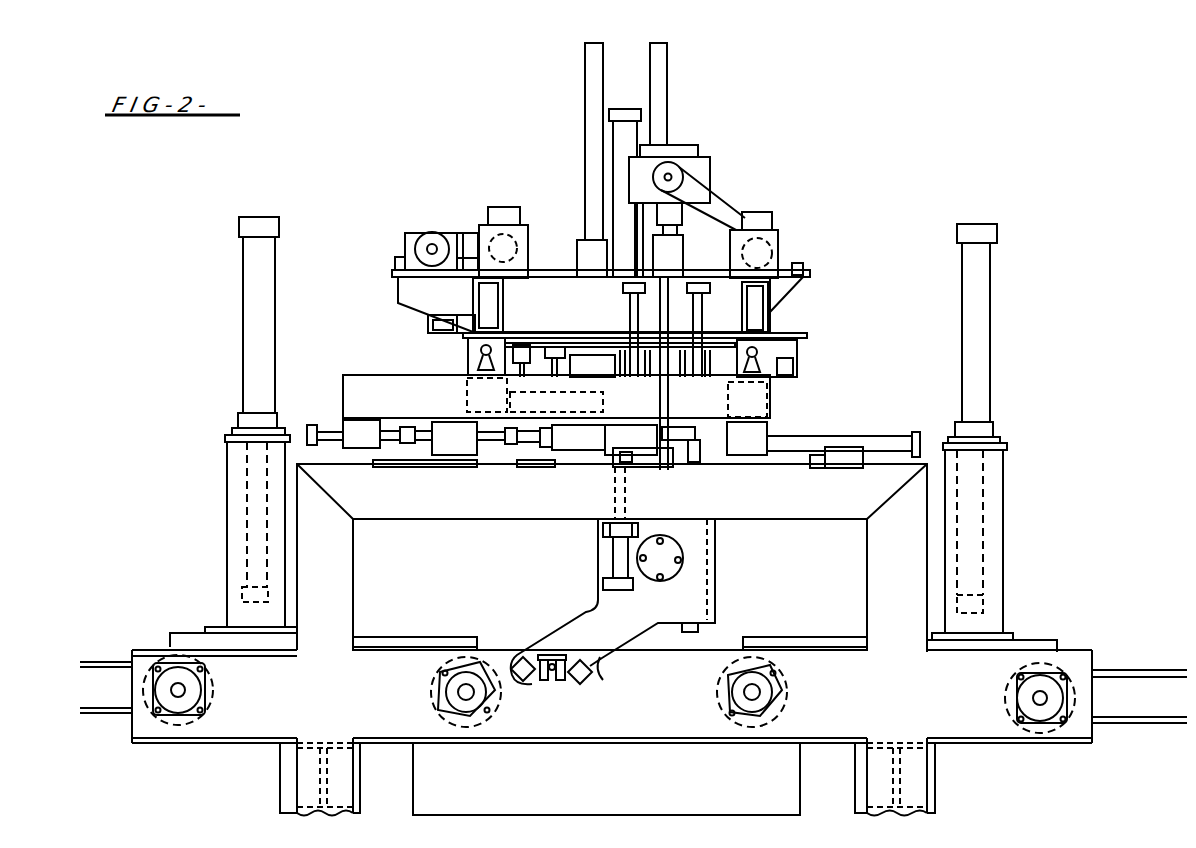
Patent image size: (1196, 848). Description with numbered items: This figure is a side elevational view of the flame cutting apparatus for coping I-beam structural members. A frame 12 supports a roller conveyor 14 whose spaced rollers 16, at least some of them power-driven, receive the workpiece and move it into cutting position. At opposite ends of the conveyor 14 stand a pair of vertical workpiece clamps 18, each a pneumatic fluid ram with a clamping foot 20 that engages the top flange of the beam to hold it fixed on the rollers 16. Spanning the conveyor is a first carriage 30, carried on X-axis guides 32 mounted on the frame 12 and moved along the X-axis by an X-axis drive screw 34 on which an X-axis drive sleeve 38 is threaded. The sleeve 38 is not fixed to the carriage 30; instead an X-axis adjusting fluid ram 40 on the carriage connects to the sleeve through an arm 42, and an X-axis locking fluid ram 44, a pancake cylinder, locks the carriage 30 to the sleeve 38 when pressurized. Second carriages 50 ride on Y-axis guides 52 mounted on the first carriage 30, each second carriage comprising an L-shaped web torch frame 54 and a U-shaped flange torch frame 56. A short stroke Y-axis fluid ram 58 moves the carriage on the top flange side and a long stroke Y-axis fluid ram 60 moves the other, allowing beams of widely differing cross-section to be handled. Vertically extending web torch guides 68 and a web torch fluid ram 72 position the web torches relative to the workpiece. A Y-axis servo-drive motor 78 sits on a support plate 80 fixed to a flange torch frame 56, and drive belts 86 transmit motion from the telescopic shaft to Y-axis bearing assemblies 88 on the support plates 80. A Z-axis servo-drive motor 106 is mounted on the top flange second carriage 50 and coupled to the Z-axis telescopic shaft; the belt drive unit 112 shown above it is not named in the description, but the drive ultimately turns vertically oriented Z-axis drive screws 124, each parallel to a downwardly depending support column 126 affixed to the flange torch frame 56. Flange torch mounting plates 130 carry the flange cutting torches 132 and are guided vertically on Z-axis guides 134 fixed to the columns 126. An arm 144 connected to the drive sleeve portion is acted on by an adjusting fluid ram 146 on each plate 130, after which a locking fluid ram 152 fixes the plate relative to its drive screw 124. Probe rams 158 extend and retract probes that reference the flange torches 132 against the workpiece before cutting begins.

The frame 12 is at (863, 554).
The roller conveyor 14 is at (779, 739).
The rollers 16 is at (207, 709).
The vertical workpiece clamps 18 is at (240, 278).
The clamping foot 20 is at (240, 596).
The first carriage 30 is at (783, 414).
The X-axis guides 32 is at (835, 442).
The X-axis drive screw 34 is at (488, 455).
The X-axis drive sleeve 38 is at (622, 442).
The X-axis adjusting fluid ram 40 is at (604, 394).
The arm 42 is at (662, 430).
The X-axis locking fluid ram 44 is at (531, 404).
The second carriages 50 is at (782, 320).
The Y-axis guides 52 is at (482, 355).
The web torch frame 54 is at (428, 319).
The flange torch frame 56 is at (570, 305).
The short stroke Y-axis fluid ram 58 is at (518, 348).
The long stroke Y-axis fluid ram 60 is at (791, 366).
The web torch guides 68 is at (592, 74).
The web torch fluid ram 72 is at (633, 106).
The Y-axis servo-drive motor 78 is at (518, 243).
The support plate 80 is at (398, 278).
The drive belts 86 is at (452, 233).
The Y-axis bearing assemblies 88 is at (407, 242).
The Z-axis servo-drive motor 106 is at (771, 245).
The drive unit 112 is at (713, 198).
The Z-axis drive screw 124 is at (667, 305).
The support column 126 is at (686, 630).
The flange torch mounting plates 130 is at (632, 632).
The flange cutting torches 132 is at (566, 657).
The Z-axis guides 134 is at (630, 304).
The arm 144 is at (660, 462).
The adjusting fluid ram 146 is at (599, 553).
The locking fluid ram 152 is at (672, 572).
The probe rams 158 is at (528, 683).